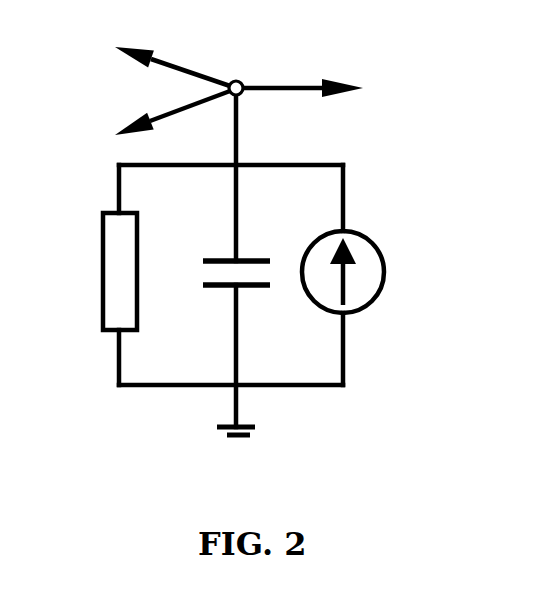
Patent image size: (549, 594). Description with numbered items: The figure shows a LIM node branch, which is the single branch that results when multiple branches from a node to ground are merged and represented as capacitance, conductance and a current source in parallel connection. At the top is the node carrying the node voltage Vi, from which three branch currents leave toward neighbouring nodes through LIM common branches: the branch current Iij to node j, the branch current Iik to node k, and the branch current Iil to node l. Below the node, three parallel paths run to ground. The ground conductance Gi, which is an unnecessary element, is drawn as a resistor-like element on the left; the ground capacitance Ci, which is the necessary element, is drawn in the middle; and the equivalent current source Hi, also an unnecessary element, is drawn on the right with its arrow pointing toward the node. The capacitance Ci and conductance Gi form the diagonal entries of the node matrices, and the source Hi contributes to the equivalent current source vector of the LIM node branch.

The node voltage Vi is at (244, 49).
The branch current to node j Iij is at (332, 86).
The branch current to node k Iik is at (140, 43).
The branch current to node l Iil is at (140, 124).
The ground conductance Gi is at (88, 289).
The ground capacitance Ci is at (220, 313).
The equivalent current source Hi is at (372, 298).